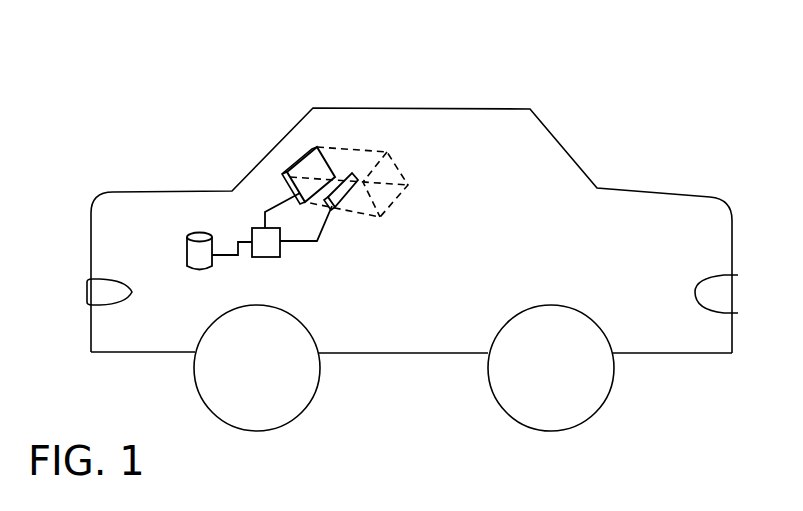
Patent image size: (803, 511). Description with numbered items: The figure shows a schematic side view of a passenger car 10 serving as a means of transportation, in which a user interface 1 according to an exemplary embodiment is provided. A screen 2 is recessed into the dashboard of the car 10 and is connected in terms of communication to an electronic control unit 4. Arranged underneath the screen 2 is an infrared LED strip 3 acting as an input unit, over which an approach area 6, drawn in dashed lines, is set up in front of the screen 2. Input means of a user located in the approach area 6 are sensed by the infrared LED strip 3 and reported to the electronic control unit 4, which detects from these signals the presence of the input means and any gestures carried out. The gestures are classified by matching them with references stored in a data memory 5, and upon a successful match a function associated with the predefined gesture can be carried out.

The user interface 1 is at (172, 70).
The screen 2 is at (310, 165).
The infrared LED strip 3 is at (353, 175).
The electronic control unit 4 is at (258, 238).
The data memory 5 is at (193, 233).
The approach area 6 is at (398, 167).
The passenger car 10 is at (563, 148).